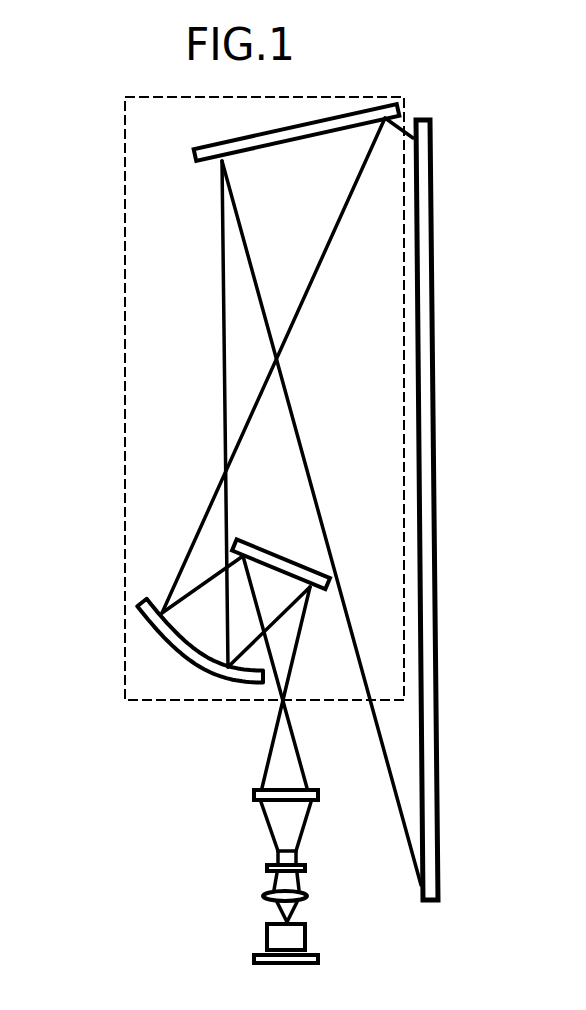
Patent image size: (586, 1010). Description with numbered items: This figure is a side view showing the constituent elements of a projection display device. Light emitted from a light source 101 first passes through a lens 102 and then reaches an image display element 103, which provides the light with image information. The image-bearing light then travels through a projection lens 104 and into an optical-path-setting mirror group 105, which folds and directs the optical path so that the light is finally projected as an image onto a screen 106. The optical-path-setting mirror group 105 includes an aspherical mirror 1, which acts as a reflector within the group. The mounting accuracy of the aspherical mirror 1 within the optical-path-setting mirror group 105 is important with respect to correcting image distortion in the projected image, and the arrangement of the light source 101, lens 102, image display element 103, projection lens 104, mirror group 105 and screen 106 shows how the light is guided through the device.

The aspherical mirror 1 is at (150, 625).
The light source 101 is at (265, 940).
The lens 102 is at (263, 897).
The image display element 103 is at (265, 867).
The projection lens 104 is at (252, 791).
The optical-path-setting mirror group 105 is at (125, 373).
The screen 106 is at (442, 850).